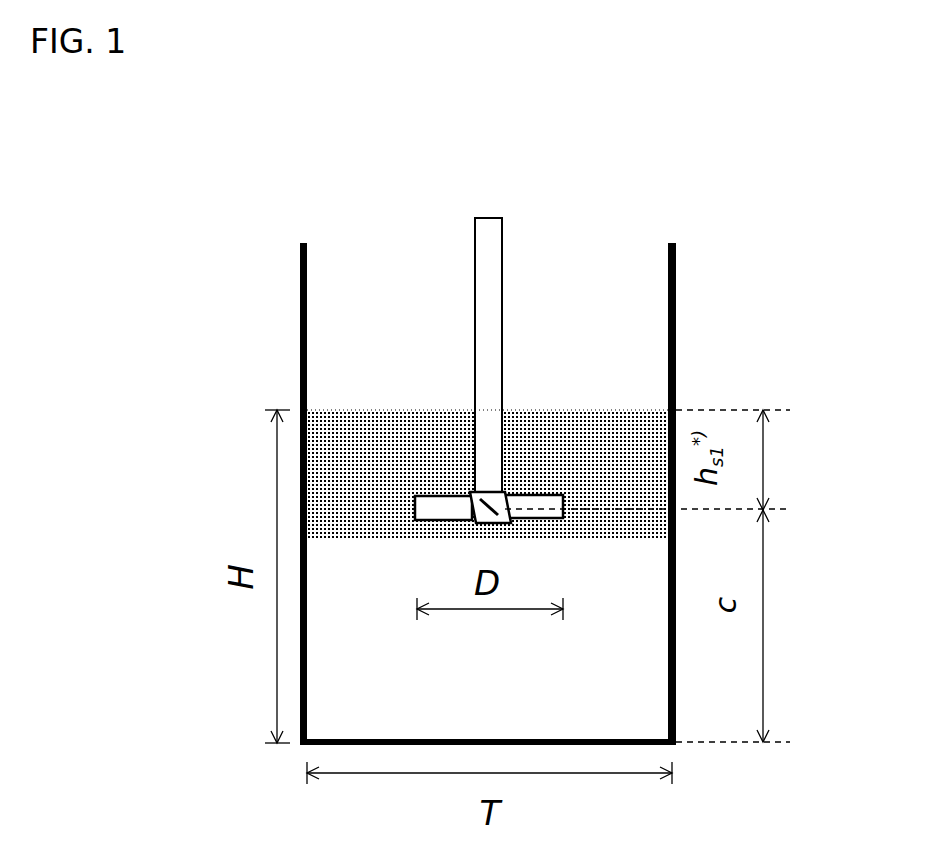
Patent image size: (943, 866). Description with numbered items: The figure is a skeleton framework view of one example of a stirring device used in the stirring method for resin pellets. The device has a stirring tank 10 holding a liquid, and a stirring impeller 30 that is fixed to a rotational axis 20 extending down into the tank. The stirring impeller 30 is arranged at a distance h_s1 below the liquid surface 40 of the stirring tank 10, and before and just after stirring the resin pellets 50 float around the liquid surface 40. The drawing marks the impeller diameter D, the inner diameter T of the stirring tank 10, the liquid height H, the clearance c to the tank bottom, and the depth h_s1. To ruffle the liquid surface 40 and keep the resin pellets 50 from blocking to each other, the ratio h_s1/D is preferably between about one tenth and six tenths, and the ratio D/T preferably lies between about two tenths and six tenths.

The stirring tank 10 is at (676, 312).
The rotational axis 20 is at (502, 266).
The stirring impeller 30 is at (538, 494).
The liquid surface 40 is at (355, 402).
The resin pellets 50 is at (579, 432).